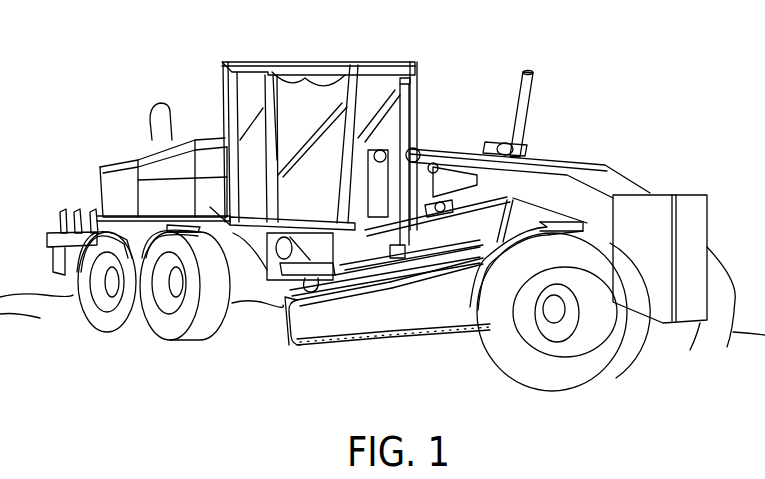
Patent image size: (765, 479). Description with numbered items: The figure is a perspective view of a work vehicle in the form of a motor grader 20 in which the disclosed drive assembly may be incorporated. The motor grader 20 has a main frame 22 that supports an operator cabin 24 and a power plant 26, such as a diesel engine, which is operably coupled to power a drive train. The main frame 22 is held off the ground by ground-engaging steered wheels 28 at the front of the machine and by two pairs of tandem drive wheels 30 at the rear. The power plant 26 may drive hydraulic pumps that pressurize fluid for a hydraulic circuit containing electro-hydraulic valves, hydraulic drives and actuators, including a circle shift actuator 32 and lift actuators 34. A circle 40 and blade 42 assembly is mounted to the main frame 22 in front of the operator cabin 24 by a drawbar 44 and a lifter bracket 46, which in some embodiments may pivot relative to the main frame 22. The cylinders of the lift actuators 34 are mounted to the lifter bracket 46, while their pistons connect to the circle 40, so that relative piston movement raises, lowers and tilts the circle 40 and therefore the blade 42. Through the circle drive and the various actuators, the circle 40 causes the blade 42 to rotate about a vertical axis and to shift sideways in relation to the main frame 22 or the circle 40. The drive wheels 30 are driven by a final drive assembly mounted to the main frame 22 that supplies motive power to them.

The motor grader 20 is at (598, 104).
The main frame 22 is at (632, 177).
The operator cabin 24 is at (307, 78).
The power plant 26 is at (118, 187).
The ground-engaging steered wheels 28 is at (653, 327).
The tandem drive wheels 30 is at (165, 288).
The circle shift actuator 32 is at (460, 237).
The lift actuators 34 is at (527, 102).
The circle 40 is at (401, 272).
The blade 42 is at (297, 325).
The drawbar 44 is at (453, 266).
The lifter bracket 46 is at (420, 157).